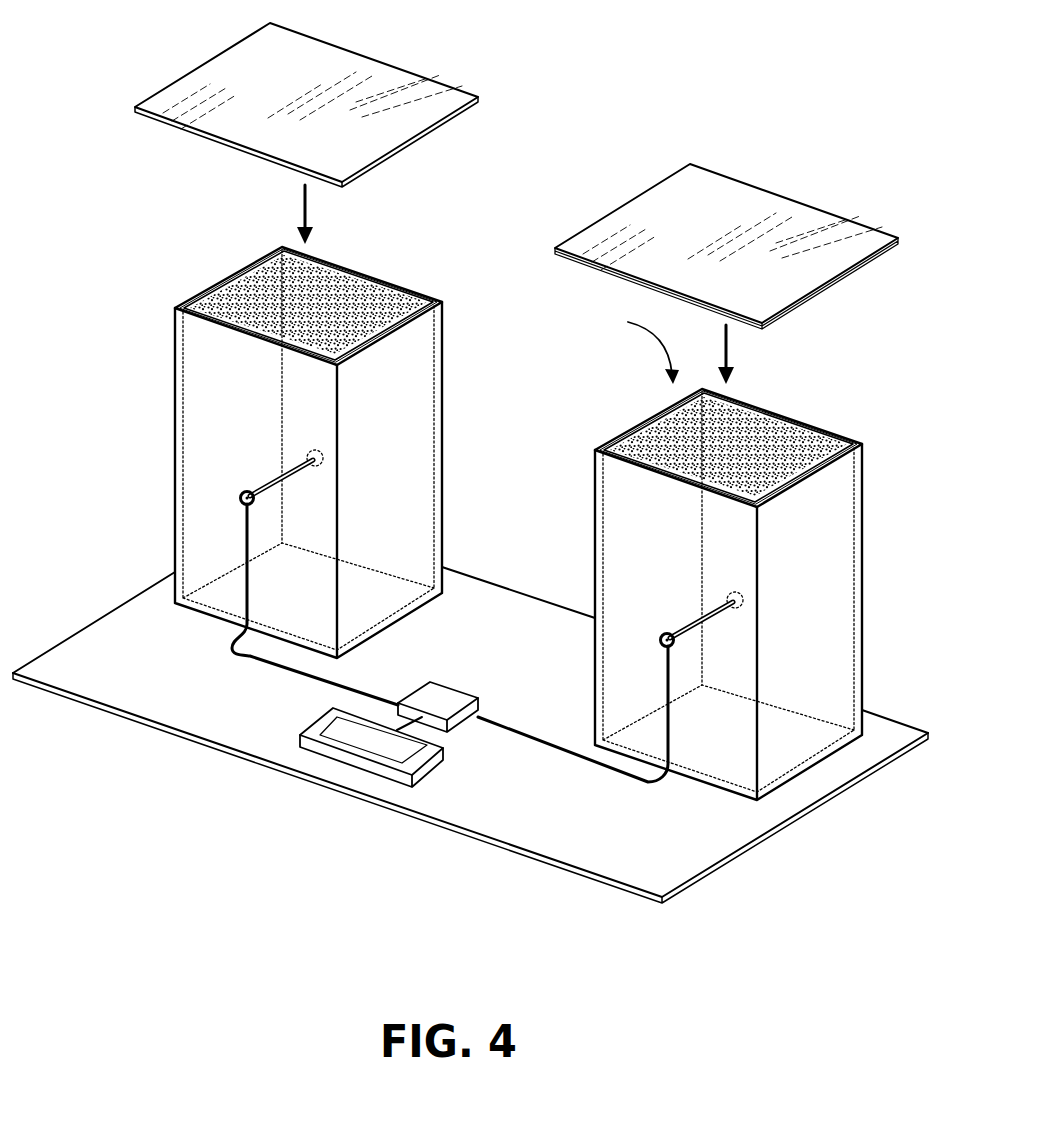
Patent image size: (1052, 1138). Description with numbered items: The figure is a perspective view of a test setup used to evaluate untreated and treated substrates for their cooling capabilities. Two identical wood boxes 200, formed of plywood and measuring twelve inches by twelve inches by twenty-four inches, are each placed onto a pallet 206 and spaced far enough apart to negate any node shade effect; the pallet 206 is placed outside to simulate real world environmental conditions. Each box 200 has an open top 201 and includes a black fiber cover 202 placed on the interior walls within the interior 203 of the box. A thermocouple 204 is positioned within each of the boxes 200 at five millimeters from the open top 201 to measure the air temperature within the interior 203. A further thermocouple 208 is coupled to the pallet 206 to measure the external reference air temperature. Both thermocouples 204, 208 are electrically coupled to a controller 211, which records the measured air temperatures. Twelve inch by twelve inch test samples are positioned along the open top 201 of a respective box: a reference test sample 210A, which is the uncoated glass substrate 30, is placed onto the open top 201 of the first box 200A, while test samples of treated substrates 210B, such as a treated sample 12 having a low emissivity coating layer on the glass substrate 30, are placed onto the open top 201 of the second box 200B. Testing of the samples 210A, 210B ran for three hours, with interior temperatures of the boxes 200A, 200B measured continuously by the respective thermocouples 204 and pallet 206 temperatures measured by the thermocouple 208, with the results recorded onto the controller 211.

The glass substrate 30 is at (271, 126).
The reference test sample 210A is at (237, 75).
The treated sample 12 is at (704, 262).
The test samples of treated substrates 210B is at (685, 202).
The wood boxes 200 is at (449, 523).
The first box 200A is at (202, 542).
The second box 200B is at (622, 682).
The open top 201 is at (245, 303).
The black fiber cover 202 is at (378, 303).
The interior 203 is at (633, 347).
The thermocouple 204 is at (308, 450).
The pallet 206 is at (615, 835).
The thermocouple 208 is at (355, 763).
The controller 211 is at (443, 695).